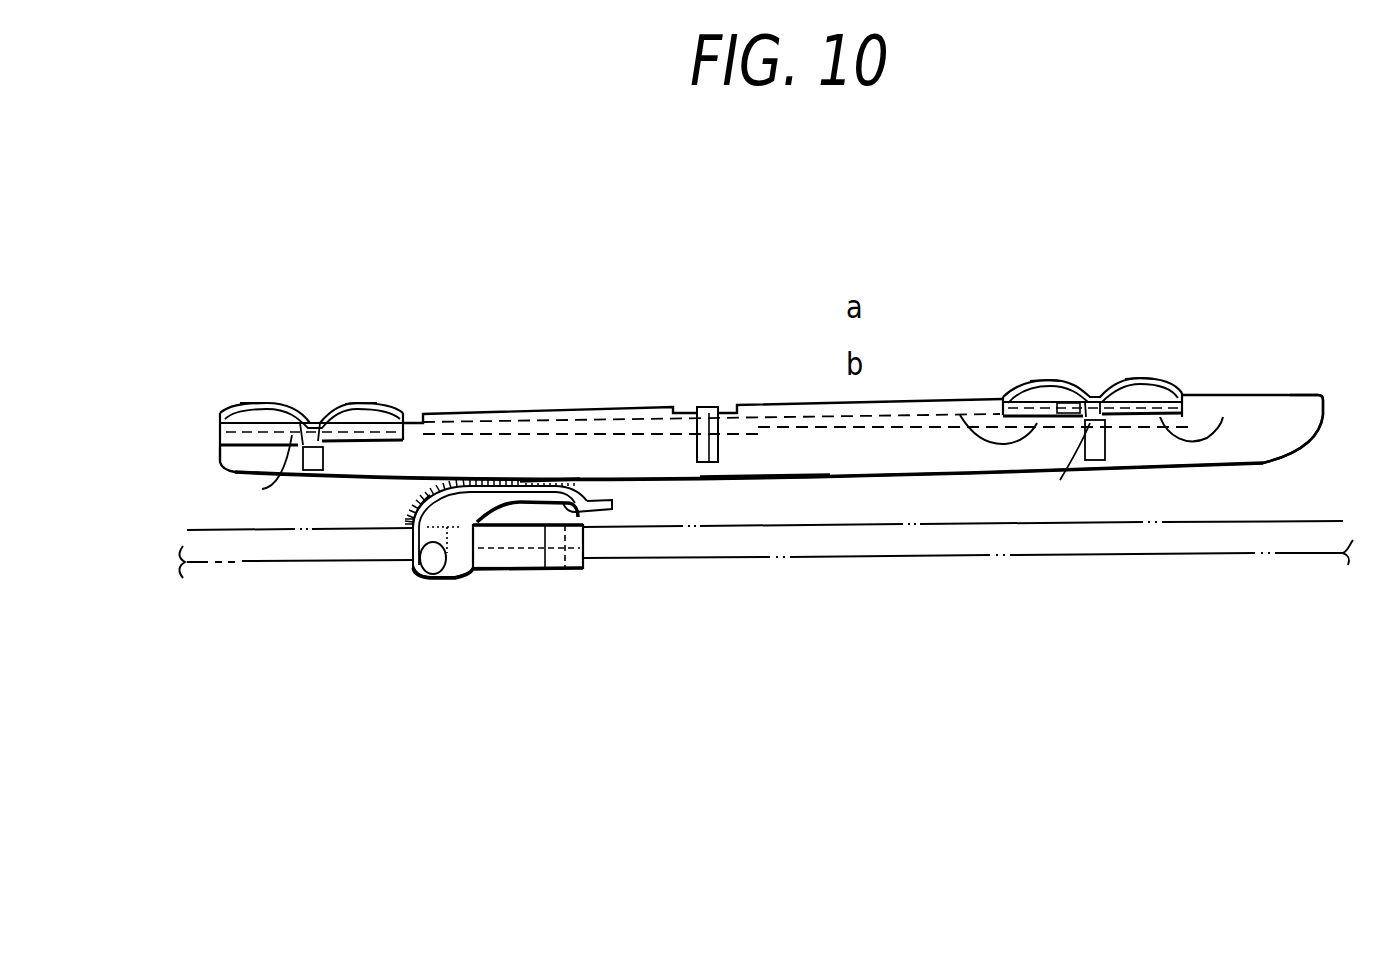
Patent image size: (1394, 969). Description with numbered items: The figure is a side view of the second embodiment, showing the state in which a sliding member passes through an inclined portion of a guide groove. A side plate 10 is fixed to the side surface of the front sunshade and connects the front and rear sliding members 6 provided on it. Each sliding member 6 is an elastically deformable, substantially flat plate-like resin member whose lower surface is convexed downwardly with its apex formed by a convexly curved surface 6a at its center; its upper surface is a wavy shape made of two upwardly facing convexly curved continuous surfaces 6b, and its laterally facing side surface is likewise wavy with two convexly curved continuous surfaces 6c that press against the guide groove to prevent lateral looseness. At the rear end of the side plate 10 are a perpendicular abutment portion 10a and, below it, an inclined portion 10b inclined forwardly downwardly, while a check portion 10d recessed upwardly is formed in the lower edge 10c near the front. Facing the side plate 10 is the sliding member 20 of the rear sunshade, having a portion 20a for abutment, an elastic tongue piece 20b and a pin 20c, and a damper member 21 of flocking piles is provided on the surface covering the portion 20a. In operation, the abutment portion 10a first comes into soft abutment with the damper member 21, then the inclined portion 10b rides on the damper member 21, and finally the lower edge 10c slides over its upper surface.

The sliding member 6 is at (302, 415).
The convexly curved surface 6a is at (262, 489).
The convexly curved continuous surfaces 6b is at (268, 405).
The convexly curved continuous surfaces 6c is at (260, 428).
The side plate 10 is at (673, 410).
The abutment portion 10a is at (1323, 398).
The inclined portion 10b is at (1300, 437).
The lower edge 10c is at (767, 478).
The check portion 10d is at (550, 482).
The sliding member 20 is at (520, 572).
The portion for abutment 20a is at (413, 519).
The elastic tongue piece 20b is at (582, 484).
The pin 20c is at (432, 575).
The damper member 21 is at (412, 503).